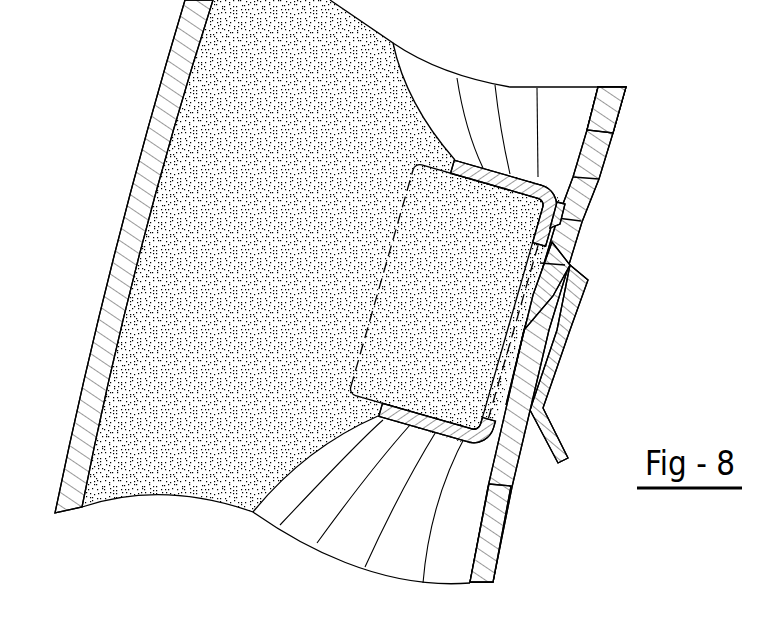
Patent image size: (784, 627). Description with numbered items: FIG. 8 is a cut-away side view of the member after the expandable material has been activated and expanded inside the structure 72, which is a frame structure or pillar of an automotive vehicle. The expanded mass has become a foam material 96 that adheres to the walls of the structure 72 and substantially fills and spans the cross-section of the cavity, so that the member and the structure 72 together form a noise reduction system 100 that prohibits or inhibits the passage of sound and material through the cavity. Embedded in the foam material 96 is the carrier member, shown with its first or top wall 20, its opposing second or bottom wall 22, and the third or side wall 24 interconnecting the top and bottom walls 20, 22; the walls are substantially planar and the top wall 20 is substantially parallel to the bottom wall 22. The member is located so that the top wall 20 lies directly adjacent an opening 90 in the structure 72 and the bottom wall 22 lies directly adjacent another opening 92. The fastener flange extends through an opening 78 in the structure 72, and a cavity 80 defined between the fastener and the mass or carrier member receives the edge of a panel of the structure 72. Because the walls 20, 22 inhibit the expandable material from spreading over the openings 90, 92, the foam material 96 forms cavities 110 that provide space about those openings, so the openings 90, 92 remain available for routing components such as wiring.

The noise reduction system 100 is at (123, 69).
The foam material 96 is at (258, 203).
The first or top wall 20 is at (487, 172).
The second or bottom wall 22 is at (407, 425).
The third or side wall 24 is at (555, 200).
The structure 72 is at (610, 111).
The opening 90 is at (593, 157).
The another opening 92 is at (500, 510).
The opening 78 is at (570, 235).
The cavity 80 is at (570, 288).
The cavities 110 is at (553, 107).